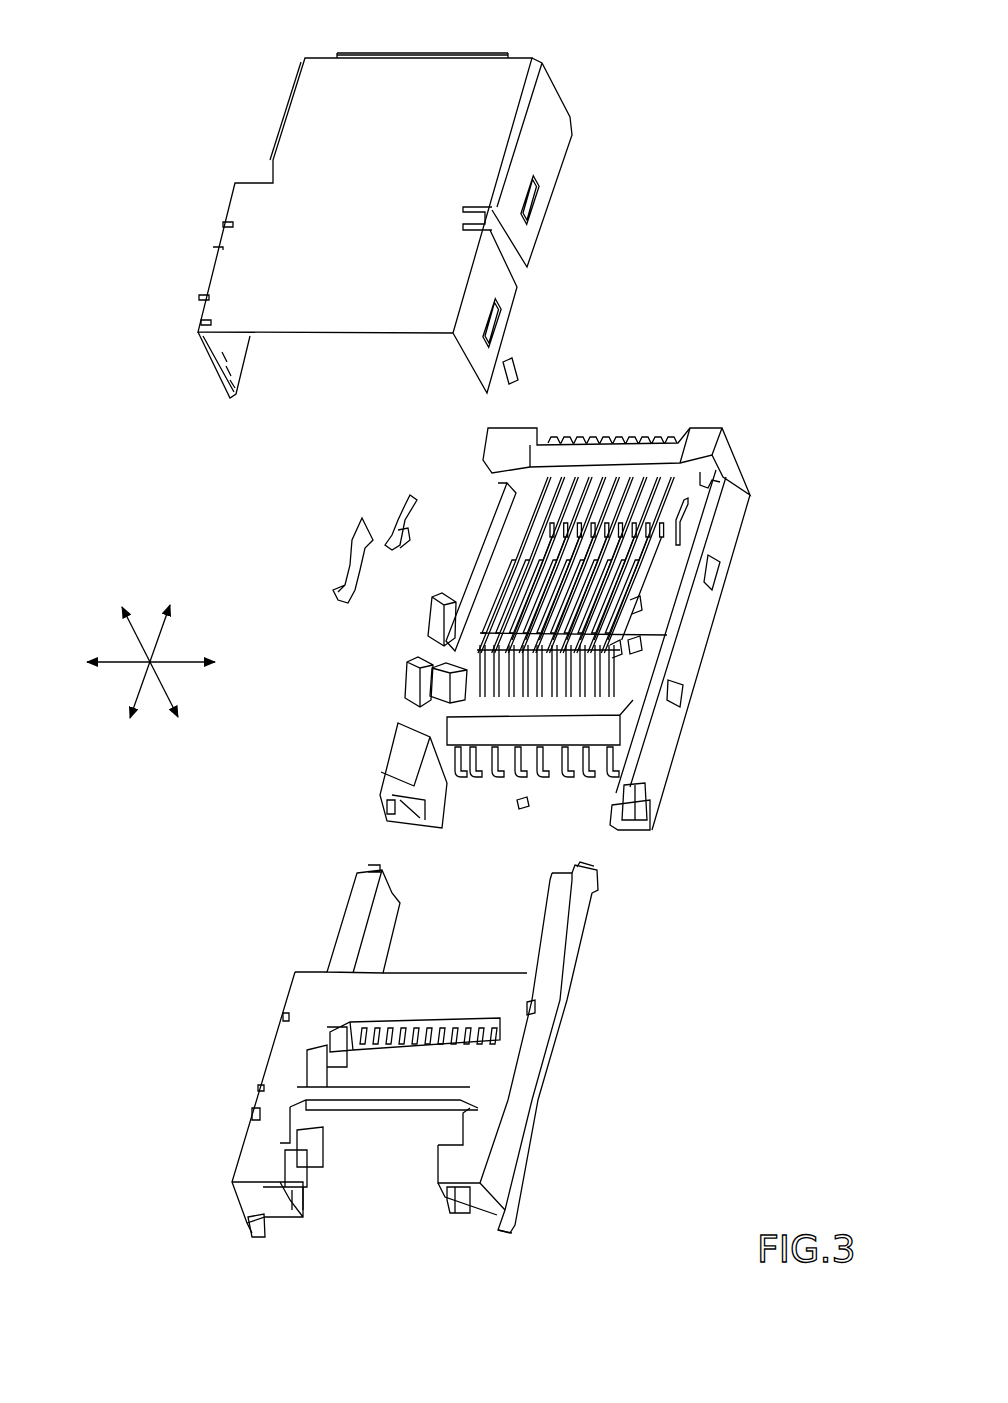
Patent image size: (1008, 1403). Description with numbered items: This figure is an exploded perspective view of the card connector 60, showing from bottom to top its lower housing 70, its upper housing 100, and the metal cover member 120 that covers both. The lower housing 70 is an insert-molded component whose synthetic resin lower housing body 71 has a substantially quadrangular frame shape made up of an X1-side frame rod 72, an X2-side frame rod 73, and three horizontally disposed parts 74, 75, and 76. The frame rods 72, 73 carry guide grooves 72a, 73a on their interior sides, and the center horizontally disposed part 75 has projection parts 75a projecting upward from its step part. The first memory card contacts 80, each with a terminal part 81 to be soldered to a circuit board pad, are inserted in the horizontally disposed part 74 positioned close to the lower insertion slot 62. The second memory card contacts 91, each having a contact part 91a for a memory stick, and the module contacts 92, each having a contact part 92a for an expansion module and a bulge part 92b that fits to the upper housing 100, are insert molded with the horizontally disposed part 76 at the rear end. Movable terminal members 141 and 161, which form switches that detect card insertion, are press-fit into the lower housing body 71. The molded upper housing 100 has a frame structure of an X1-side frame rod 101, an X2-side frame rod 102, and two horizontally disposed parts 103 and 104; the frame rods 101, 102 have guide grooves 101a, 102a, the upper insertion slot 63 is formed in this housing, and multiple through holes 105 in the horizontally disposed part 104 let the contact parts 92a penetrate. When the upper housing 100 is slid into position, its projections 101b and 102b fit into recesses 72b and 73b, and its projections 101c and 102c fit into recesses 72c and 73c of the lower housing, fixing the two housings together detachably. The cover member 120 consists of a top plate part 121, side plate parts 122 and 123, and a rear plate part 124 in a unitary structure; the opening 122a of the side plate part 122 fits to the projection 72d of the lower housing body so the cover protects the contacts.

The card connector 60 is at (462, 648).
The lower insertion slot 62 is at (522, 806).
The upper insertion slot 63 is at (387, 1190).
The lower housing 70 is at (583, 622).
The lower housing body 71 is at (643, 438).
The X1-side frame rod 72 is at (735, 665).
The guide groove 72a is at (612, 822).
The recess 72b is at (715, 481).
The recess 72c is at (638, 808).
The projection 72d is at (712, 567).
The X2-side frame rod 73 is at (406, 643).
The guide groove 73a is at (387, 810).
The recess 73b is at (500, 497).
The recess 73c is at (383, 806).
The horizontally disposed part 74 is at (517, 732).
The horizontally disposed part 75 is at (643, 619).
The projection part 75a is at (637, 650).
The horizontally disposed part 76 is at (625, 452).
The first memory card contact 80 is at (562, 717).
The terminal part 81 is at (492, 772).
The second memory card contact 91 is at (640, 565).
The contact part 91a is at (678, 532).
The module contact 92 is at (659, 590).
The contact part 92a is at (617, 650).
The bulge part 92b is at (634, 603).
The upper housing 100 is at (423, 1075).
The X1-side frame rod 101 is at (558, 1071).
The guide groove 101a is at (450, 1196).
The projection 101b is at (587, 866).
The projection 101c is at (510, 1220).
The X2-side frame rod 102 is at (282, 1075).
The guide groove 102a is at (295, 1195).
The projection 102b is at (366, 867).
The projection 102c is at (254, 1232).
The horizontally disposed part 103 is at (383, 1103).
The horizontally disposed part 104 is at (444, 985).
The through hole 105 is at (453, 1037).
The cover member 120 is at (393, 200).
The top plate part 121 is at (405, 78).
The side plate part 122 is at (546, 225).
The opening 122a is at (537, 197).
The side plate part 123 is at (228, 200).
The rear plate part 124 is at (465, 53).
The movable terminal member 141 is at (393, 505).
The movable terminal member 161 is at (352, 545).